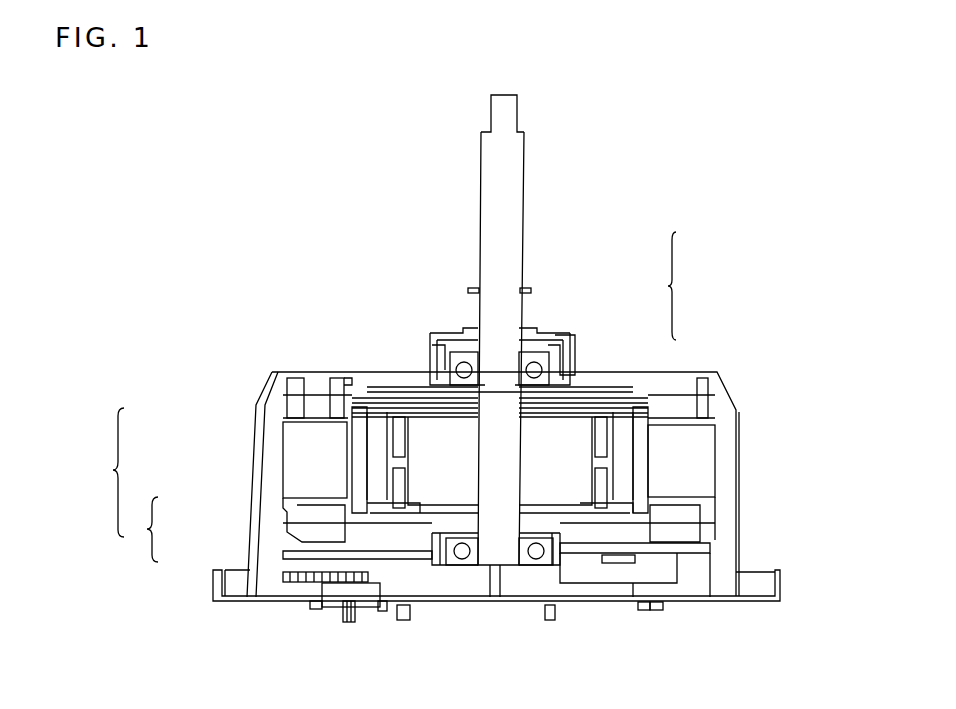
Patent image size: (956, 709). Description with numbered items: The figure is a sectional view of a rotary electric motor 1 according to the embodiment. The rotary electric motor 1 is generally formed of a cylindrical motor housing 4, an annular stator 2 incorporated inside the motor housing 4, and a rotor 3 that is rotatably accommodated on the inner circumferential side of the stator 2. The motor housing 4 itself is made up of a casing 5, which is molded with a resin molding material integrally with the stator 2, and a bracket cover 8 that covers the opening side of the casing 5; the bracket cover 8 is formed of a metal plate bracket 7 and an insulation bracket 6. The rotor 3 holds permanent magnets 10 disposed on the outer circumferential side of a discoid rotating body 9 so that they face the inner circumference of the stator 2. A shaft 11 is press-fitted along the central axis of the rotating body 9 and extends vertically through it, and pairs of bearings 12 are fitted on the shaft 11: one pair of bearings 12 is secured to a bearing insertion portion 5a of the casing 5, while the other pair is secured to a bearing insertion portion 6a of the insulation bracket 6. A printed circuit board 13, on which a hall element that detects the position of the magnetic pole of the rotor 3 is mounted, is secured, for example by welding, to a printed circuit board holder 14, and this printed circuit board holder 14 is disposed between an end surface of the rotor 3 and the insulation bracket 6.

The rotary electric motor 1 is at (252, 338).
The stator 2 is at (280, 460).
The rotor 3 is at (682, 286).
The motor housing 4 is at (108, 472).
The casing 5 is at (256, 428).
The bearing insertion portion 5a is at (270, 382).
The insulation bracket 6 is at (282, 596).
The bearing insertion portion 6a is at (562, 558).
The metal plate bracket 7 is at (213, 585).
The bracket cover 8 is at (143, 529).
The rotating body 9 is at (552, 427).
The permanent magnets 10 is at (627, 440).
The shaft 11 is at (522, 272).
The bearings 12 is at (438, 385).
The printed circuit board 13 is at (345, 578).
The printed circuit board holder 14 is at (310, 583).